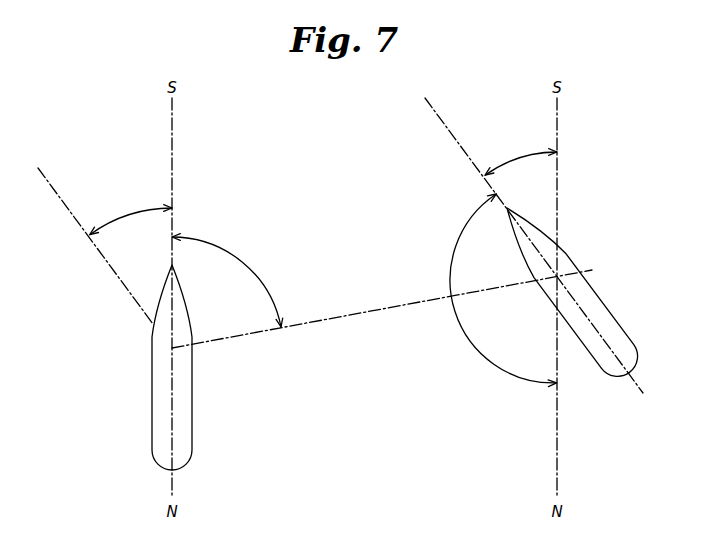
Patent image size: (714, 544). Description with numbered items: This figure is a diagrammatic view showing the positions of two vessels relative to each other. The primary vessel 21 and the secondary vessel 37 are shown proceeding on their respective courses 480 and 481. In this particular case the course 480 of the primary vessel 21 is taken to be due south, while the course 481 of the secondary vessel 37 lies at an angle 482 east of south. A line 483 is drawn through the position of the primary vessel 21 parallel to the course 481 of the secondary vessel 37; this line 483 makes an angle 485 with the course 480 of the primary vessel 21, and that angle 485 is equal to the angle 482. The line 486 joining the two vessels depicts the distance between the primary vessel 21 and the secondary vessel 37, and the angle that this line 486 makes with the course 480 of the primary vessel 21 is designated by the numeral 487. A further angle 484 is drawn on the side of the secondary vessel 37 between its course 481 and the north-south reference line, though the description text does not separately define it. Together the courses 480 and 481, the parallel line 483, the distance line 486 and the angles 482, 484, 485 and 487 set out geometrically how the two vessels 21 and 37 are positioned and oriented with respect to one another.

The primary vessel 21 is at (167, 383).
The secondary vessel 37 is at (602, 305).
The course of the primary vessel 480 is at (175, 174).
The course of the secondary vessel 481 is at (453, 139).
The angle east of south 482 is at (521, 157).
The line parallel to the secondary vessel's course 483 is at (73, 216).
The relative bearing angle 484 is at (503, 290).
The angle between line 483 and course of primary vessel 485 is at (131, 216).
The line depicting distance between vessels 486 is at (345, 320).
The angle between distance line and primary vessel's course 487 is at (227, 280).